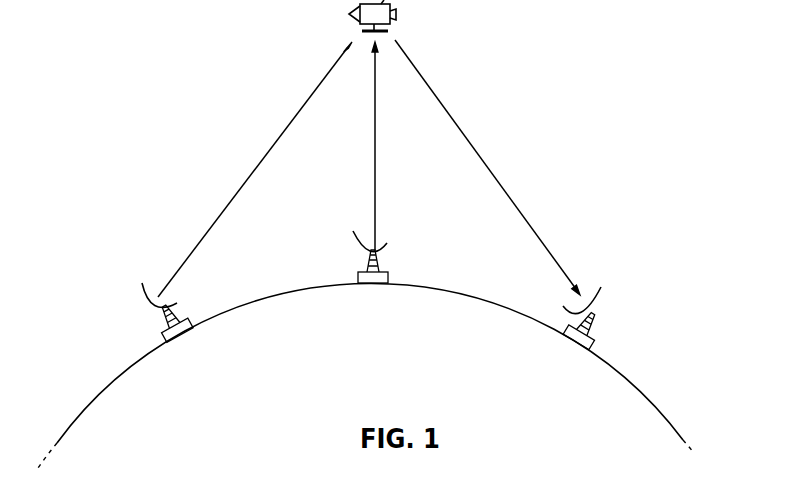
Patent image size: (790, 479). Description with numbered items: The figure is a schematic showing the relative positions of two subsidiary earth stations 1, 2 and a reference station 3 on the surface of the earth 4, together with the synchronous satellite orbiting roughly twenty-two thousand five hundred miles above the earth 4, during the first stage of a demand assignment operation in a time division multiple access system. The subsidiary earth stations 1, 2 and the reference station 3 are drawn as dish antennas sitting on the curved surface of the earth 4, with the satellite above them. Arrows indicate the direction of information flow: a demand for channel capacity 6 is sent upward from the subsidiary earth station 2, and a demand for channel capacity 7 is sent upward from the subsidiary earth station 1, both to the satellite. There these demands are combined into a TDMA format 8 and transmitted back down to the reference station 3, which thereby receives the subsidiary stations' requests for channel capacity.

The subsidiary earth station 1 is at (412, 257).
The subsidiary earth station 2 is at (198, 331).
The reference station 3 is at (655, 318).
The earth 4 is at (430, 340).
The demand for channel capacity 6 is at (322, 82).
The demand for channel capacity 7 is at (375, 158).
The TDMA format 8 is at (457, 125).